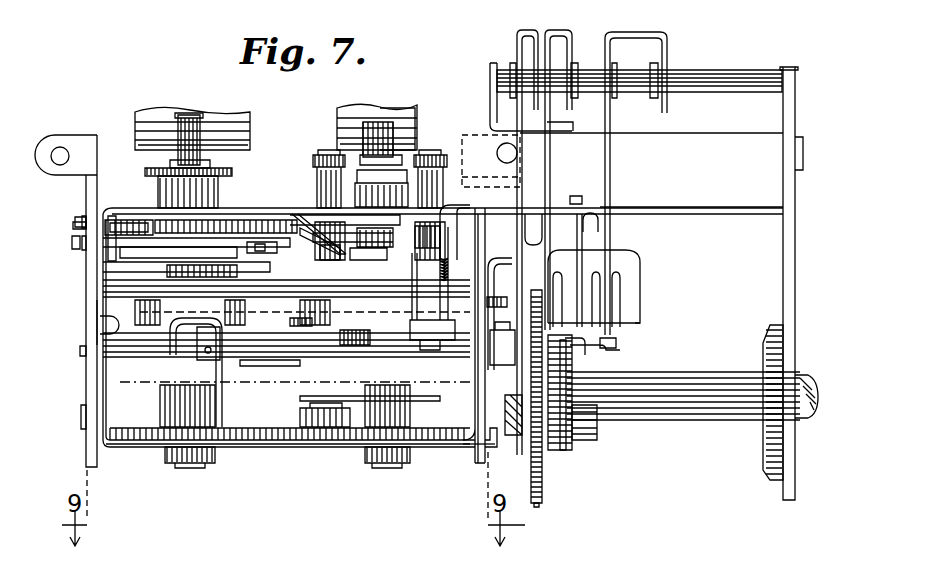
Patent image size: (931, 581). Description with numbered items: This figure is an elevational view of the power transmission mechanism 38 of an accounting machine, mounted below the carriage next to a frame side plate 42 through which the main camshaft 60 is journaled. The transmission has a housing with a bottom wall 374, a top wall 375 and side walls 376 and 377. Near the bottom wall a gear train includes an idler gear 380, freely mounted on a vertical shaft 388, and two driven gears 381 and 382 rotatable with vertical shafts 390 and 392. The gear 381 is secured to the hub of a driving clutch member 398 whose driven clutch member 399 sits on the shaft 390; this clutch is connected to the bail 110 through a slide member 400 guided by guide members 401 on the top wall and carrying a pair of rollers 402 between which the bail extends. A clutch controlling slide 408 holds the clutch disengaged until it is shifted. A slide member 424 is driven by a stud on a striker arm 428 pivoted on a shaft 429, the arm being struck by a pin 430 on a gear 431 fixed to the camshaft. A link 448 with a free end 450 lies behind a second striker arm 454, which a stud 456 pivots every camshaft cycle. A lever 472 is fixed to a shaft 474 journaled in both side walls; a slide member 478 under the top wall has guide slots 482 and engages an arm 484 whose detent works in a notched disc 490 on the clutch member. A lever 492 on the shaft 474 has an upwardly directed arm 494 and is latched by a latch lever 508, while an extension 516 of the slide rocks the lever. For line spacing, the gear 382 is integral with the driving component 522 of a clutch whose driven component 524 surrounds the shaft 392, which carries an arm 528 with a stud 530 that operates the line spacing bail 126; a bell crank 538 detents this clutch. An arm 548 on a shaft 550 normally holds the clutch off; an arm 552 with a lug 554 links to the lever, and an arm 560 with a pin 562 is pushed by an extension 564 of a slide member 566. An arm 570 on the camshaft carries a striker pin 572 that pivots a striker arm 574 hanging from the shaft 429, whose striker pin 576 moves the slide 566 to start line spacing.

The power transmission mechanism 38 is at (117, 145).
The side plate 42 is at (803, 287).
The main camshaft 60 is at (698, 430).
The bail 110 is at (395, 110).
The line spacing bail 126 is at (165, 118).
The bottom wall 374 is at (290, 448).
The top wall 375 is at (248, 208).
The side wall 376 is at (97, 458).
The side wall 377 is at (479, 465).
The idler gear 380 is at (317, 436).
The driven gear 381 is at (444, 436).
The driven gear 382 is at (272, 442).
The vertical shaft 388 is at (300, 417).
The vertical shaft 390 is at (388, 468).
The vertical shaft 392 is at (190, 468).
The driving clutch member 398 is at (315, 333).
The driven clutch member 399 is at (333, 305).
The slide member 400 is at (353, 168).
The guide member 401 is at (323, 157).
The roller 402 is at (415, 125).
The clutch controlling slide 408 is at (290, 323).
The slide member 424 is at (555, 300).
The striker arm 428 is at (550, 148).
The shaft 429 is at (702, 70).
The pin 430 is at (553, 455).
The gear 431 is at (540, 505).
The link 448 is at (513, 258).
The free end 450 is at (505, 345).
The striker arm 454 is at (522, 177).
The stud 456 is at (510, 435).
The lever 472 is at (440, 240).
The shaft 474 is at (272, 252).
The slide member 478 is at (112, 216).
The guide slot 482 is at (97, 314).
The arm 484 is at (300, 214).
The disc 490 is at (316, 235).
The lever 492 is at (72, 240).
The upwardly directed arm 494 is at (79, 217).
The latch lever 508 is at (160, 383).
The extension 516 is at (76, 223).
The driving component 522 is at (222, 383).
The driven component 524 is at (238, 300).
The arm 528 is at (233, 172).
The stud 530 is at (192, 125).
The bell crank 538 is at (155, 220).
The arm 548 is at (222, 383).
The shaft 550 is at (292, 362).
The arm 552 is at (358, 390).
The lug 554 is at (470, 198).
The arm 560 is at (617, 255).
The pin 562 is at (598, 214).
The extension 564 is at (582, 238).
The slide member 566 is at (635, 322).
The arm 570 is at (567, 455).
The striker pin 572 is at (588, 440).
The striker arm 574 is at (610, 165).
The striker pin 576 is at (585, 355).